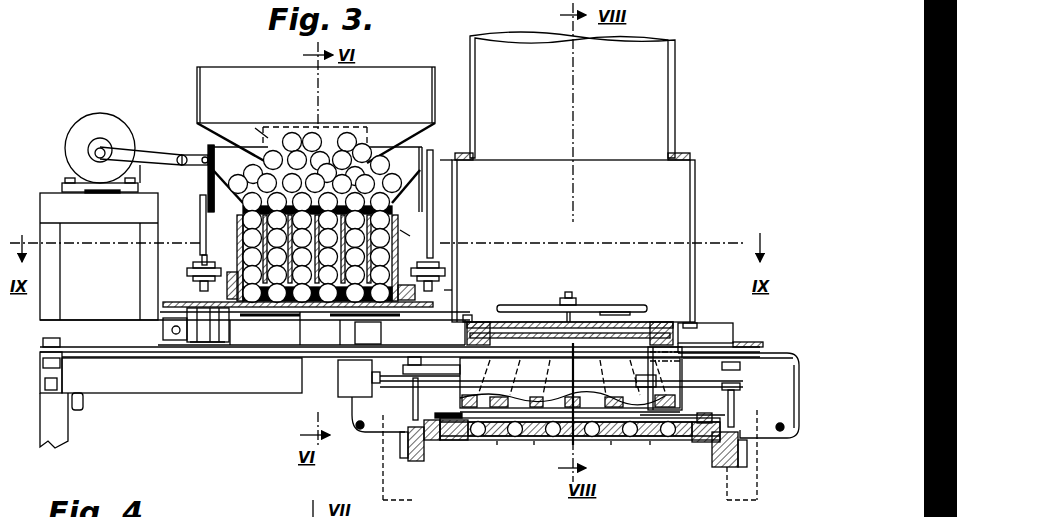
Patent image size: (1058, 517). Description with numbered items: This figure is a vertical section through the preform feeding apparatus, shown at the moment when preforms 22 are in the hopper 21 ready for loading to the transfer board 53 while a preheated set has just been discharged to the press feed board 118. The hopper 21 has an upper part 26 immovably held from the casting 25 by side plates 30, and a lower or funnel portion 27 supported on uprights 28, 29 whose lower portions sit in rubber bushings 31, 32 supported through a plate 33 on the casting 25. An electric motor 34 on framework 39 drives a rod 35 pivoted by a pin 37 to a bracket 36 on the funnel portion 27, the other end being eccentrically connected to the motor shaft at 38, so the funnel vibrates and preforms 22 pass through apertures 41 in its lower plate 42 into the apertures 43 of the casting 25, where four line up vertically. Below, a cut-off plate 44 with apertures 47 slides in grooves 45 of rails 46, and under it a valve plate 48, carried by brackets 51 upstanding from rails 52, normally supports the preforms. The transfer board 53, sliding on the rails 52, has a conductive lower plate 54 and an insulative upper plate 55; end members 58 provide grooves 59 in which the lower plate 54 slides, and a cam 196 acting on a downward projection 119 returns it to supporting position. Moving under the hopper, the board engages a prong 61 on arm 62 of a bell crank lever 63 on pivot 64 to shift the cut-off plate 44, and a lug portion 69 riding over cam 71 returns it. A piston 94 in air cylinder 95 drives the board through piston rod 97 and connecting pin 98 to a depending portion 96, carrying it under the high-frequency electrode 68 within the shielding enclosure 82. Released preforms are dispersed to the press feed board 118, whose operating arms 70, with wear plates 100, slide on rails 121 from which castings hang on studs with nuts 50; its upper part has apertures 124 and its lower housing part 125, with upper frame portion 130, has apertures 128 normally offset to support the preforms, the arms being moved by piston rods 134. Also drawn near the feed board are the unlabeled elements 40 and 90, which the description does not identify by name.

The hopper 21 is at (194, 82).
The preforms 22 is at (338, 132).
The casting 25 is at (398, 215).
The upper part 26 is at (197, 104).
The lower or funnel portion 27 is at (207, 146).
The upright 28 is at (200, 211).
The upright 29 is at (433, 195).
The side plates 30 is at (258, 122).
The rubber bushing 31 is at (192, 266).
The rubber bushing 32 is at (446, 266).
The plate 33 is at (204, 263).
The power means 34 is at (75, 134).
The rod 35 is at (145, 150).
The bracket 36 is at (198, 166).
The pin 37 is at (176, 168).
The eccentric connection 38 is at (70, 164).
The framework 39 is at (66, 276).
The bolt 40 is at (413, 399).
The apertures 41 is at (424, 209).
The lower plate 42 is at (238, 215).
The apertures 43 is at (398, 240).
The cut-off plate 44 is at (405, 313).
The grooves 45 is at (448, 290).
The rails 46 is at (226, 292).
The apertures 47 is at (325, 326).
The valve plate 48 is at (162, 305).
The nuts 50 is at (745, 367).
The brackets 51 is at (368, 333).
The rails 52 is at (270, 348).
The transfer board 53 is at (660, 320).
The lower plate 54 is at (522, 305).
The upper plate 55 is at (541, 306).
The end or reinforcing members 58 is at (700, 325).
The grooves 59 is at (462, 358).
The prong 61 is at (215, 343).
The arm 62 is at (165, 328).
The bell crank lever 63 is at (245, 348).
The pivot 64 is at (198, 344).
The high-frequency electrode 68 is at (616, 306).
The lug portion 69 is at (468, 314).
The operating arms 70 is at (452, 442).
The cam 71 is at (275, 346).
The shielding enclosure 82 is at (676, 102).
The bracket 90 is at (715, 413).
The piston 94 is at (338, 372).
The air cylinder 95 is at (118, 394).
The depending portion 96 is at (682, 360).
The piston rod 97 is at (448, 384).
The connecting pin 98 is at (640, 441).
The wear plates 100 is at (440, 441).
The press feed board 118 is at (534, 442).
The downward projection 119 is at (590, 322).
The rails 121 is at (420, 462).
The apertures 124 is at (500, 441).
The lower plate and housing part 125 is at (608, 442).
The apertures 128 is at (652, 442).
The upper frame portion 130 is at (570, 446).
The rods 134 is at (360, 430).
The cam 196 is at (345, 398).